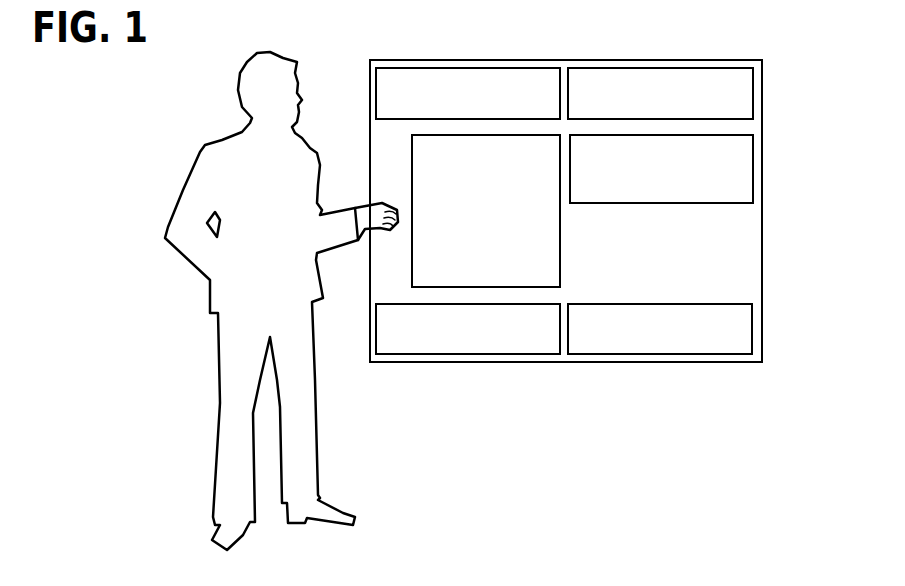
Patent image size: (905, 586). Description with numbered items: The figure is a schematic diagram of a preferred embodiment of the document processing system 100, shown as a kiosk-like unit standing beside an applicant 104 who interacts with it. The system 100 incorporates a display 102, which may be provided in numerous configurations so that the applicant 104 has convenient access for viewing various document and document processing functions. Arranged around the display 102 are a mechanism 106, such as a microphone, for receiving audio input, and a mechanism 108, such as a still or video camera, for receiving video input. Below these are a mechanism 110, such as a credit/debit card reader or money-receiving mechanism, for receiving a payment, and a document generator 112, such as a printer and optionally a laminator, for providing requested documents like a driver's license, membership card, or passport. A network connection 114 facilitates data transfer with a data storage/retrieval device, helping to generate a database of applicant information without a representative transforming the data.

The document processing system 100 is at (812, 372).
The display 102 is at (560, 270).
The applicant 104 is at (218, 152).
The mechanism for receiving audio input 106 is at (628, 67).
The mechanism for receiving video input 108 is at (427, 67).
The mechanism for receiving a payment 110 is at (427, 354).
The document generator 112 is at (628, 354).
The network connection 114 is at (657, 203).